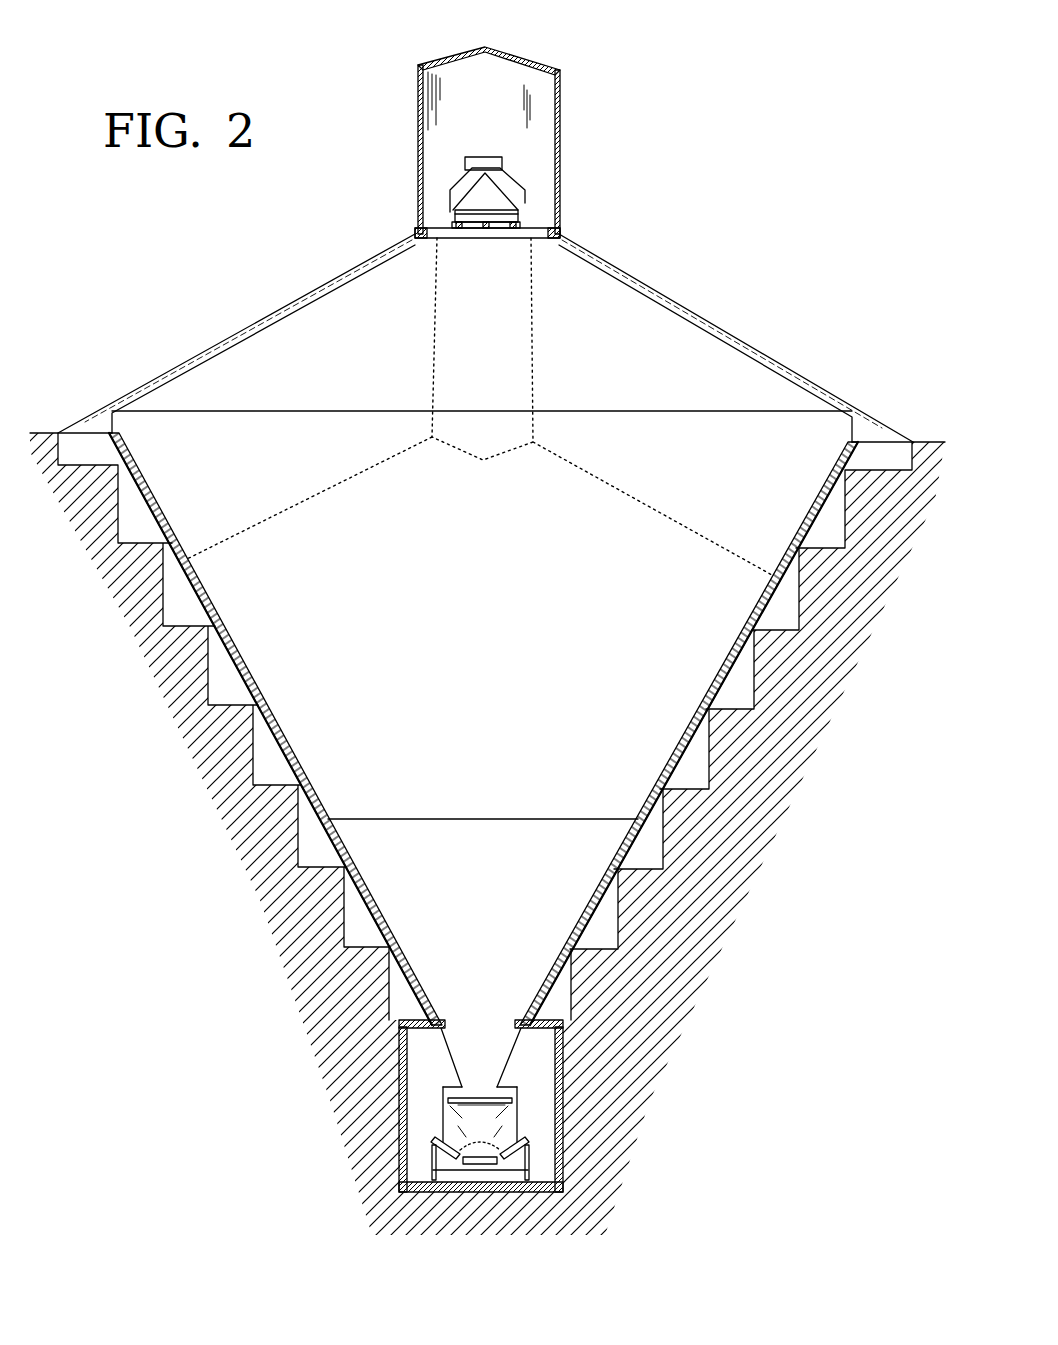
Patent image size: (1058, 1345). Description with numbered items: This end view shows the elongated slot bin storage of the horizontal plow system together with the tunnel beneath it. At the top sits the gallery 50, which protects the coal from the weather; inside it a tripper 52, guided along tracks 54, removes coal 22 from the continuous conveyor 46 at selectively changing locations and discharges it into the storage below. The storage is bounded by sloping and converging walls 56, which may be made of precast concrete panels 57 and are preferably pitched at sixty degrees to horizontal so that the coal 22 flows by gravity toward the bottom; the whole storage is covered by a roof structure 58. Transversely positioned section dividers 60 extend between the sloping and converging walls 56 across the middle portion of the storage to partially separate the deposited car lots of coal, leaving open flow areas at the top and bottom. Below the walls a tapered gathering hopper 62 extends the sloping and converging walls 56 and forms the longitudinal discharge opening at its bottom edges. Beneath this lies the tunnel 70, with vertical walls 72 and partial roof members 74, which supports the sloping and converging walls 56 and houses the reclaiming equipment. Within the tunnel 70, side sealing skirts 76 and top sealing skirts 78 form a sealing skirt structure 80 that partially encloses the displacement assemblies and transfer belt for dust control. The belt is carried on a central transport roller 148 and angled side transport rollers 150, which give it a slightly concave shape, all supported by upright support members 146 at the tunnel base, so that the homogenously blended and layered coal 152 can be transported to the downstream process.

The coal 22 is at (531, 302).
The continuous conveyor 46 is at (455, 211).
The gallery 50 is at (560, 132).
The tripper 52 is at (512, 190).
The tracks 54 is at (455, 224).
The sloping and converging walls 56 is at (167, 527).
The precast concrete panels 57 is at (237, 700).
The roof structure 58 is at (257, 330).
The section dividers 60 is at (325, 425).
The tapered gathering hopper 62 is at (510, 1043).
The tunnel 70 is at (610, 1053).
The vertical walls 72 is at (399, 1060).
The partial roof members 74 is at (420, 1020).
The side sealing skirts 76 is at (518, 1120).
The top sealing skirts 78 is at (513, 1085).
The sealing skirt structure 80 is at (436, 1100).
The upright support members 146 is at (512, 1158).
The central transport roller 148 is at (470, 1164).
The side transport rollers 150 is at (445, 1152).
The homogenously blended and layered coal 152 is at (497, 1140).